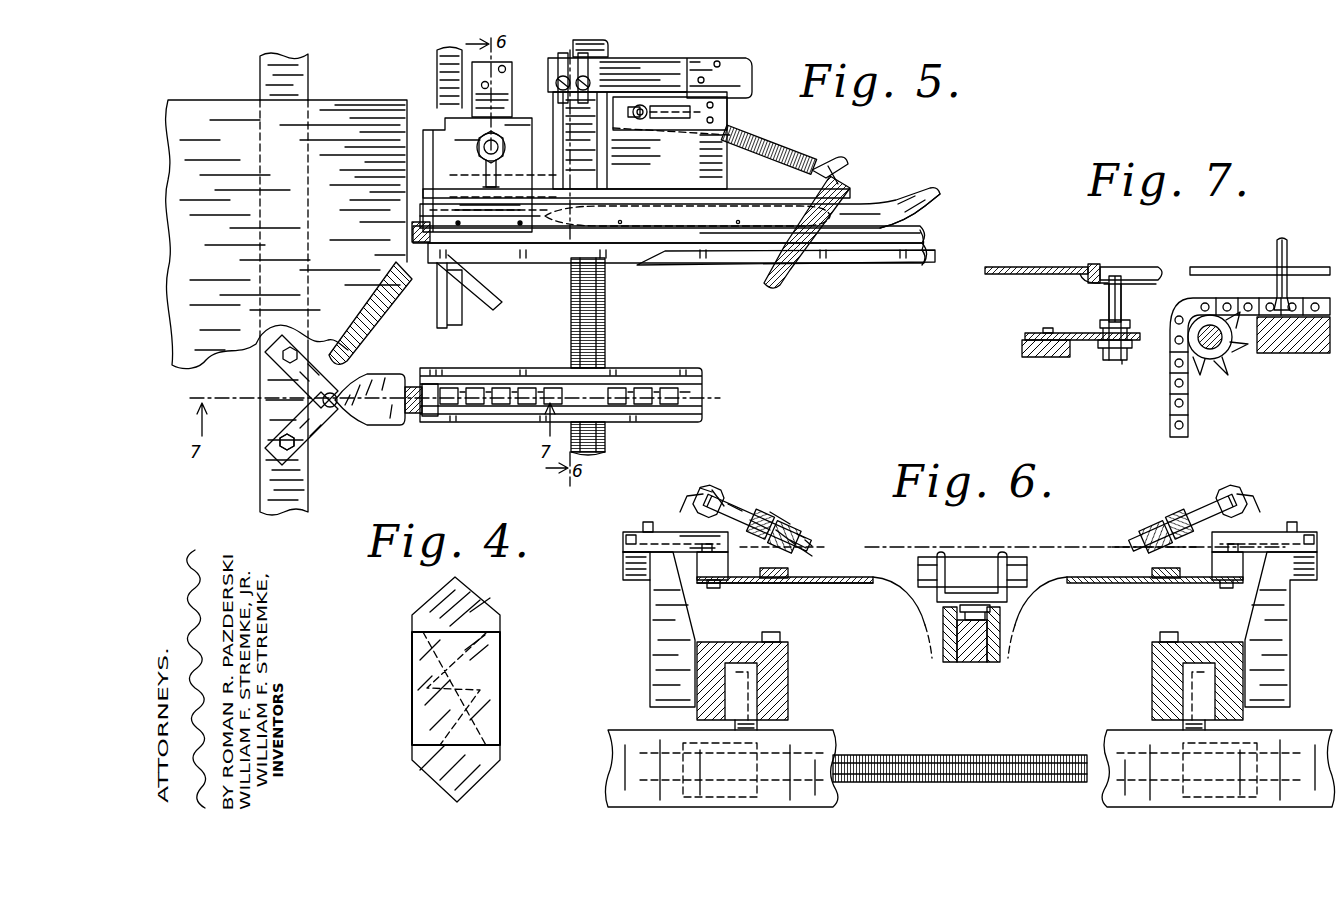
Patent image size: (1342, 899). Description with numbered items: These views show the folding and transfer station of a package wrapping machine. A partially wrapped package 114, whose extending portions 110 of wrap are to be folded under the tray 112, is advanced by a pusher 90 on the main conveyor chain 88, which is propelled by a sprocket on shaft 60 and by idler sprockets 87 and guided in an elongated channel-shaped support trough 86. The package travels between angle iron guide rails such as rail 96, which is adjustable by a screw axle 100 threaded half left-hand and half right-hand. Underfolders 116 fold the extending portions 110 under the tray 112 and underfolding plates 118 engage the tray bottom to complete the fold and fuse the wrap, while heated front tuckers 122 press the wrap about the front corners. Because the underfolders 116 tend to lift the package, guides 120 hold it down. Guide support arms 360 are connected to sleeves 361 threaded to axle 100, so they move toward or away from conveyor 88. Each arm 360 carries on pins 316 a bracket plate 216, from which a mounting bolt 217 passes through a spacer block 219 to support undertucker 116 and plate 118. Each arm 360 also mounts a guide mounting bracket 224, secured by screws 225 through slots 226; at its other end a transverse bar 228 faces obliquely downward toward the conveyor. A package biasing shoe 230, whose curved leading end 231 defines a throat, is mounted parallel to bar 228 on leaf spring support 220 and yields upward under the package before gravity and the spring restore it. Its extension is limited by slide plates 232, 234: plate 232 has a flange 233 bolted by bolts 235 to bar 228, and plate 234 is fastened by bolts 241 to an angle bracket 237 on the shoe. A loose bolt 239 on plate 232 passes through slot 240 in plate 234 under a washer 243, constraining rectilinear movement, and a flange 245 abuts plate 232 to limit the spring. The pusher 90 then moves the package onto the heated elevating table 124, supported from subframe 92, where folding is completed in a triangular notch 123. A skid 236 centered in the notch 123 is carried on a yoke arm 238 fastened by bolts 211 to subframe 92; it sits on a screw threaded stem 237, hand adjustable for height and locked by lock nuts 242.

In FIG. 5, the shaft 60 is at (463, 317).
In FIG. 5, the support trough 86 is at (520, 382).
In FIG. 7, the support trough 86 is at (1298, 354).
In FIG. 6, the support trough 86 is at (970, 665).
In FIG. 5, the idler sprockets 87 is at (424, 414).
In FIG. 7, the idler sprockets 87 is at (1228, 372).
In FIG. 5, the main conveyor chain 88 is at (481, 388).
In FIG. 7, the main conveyor chain 88 is at (1170, 401).
In FIG. 6, the main conveyor chain 88 is at (943, 660).
In FIG. 7, the pusher 90 is at (1281, 240).
In FIG. 6, the pusher 90 is at (1003, 560).
In FIG. 5, the subframe 92 is at (300, 499).
In FIG. 7, the subframe 92 is at (1047, 358).
In FIG. 5, the guide rail 96 is at (905, 266).
In FIG. 5, the screw axle 100 is at (606, 328).
In FIG. 6, the screw axle 100 is at (958, 749).
In FIG. 6, the extending portions 110 is at (925, 631).
In FIG. 4, the extending portions 110 is at (465, 592).
In FIG. 6, the tray 112 is at (880, 554).
In FIG. 4, the tray 112 is at (495, 744).
In FIG. 6, the package 114 is at (958, 554).
In FIG. 5, the underfolders 116 is at (557, 246).
In FIG. 7, the underfolders 116 is at (1308, 275).
In FIG. 6, the underfolders 116 is at (776, 585).
In FIG. 5, the underfolding plates 118 is at (463, 283).
In FIG. 6, the underfolding plates 118 is at (812, 585).
In FIG. 5, the guides 120 is at (713, 263).
In FIG. 6, the guides 120 is at (786, 512).
In FIG. 5, the front tuckers 122 is at (790, 272).
In FIG. 5, the notch 123 is at (372, 332).
In FIG. 7, the notch 123 is at (1098, 264).
In FIG. 5, the heated elevating table 124 is at (211, 128).
In FIG. 7, the heated elevating table 124 is at (1036, 266).
In FIG. 5, the bolts 211 is at (280, 446).
In FIG. 7, the bolts 211 is at (1050, 333).
In FIG. 5, the bracket plate 216 is at (506, 72).
In FIG. 6, the bracket plate 216 is at (650, 581).
In FIG. 6, the mounting bolt 217 is at (714, 589).
In FIG. 6, the spacer block 219 is at (700, 581).
In FIG. 5, the leaf spring support 220 is at (762, 209).
In FIG. 6, the leaf spring support 220 is at (795, 530).
In FIG. 5, the guide mounting bracket 224 is at (588, 167).
In FIG. 6, the guide mounting bracket 224 is at (966, 531).
In FIG. 5, the screws 225 is at (592, 83).
In FIG. 6, the screws 225 is at (646, 523).
In FIG. 5, the slots 226 is at (590, 66).
In FIG. 5, the transverse bar 228 is at (722, 194).
In FIG. 6, the transverse bar 228 is at (768, 580).
In FIG. 5, the package biasing shoe 230 is at (680, 232).
In FIG. 6, the package biasing shoe 230 is at (812, 550).
In FIG. 5, the leading end 231 is at (938, 208).
In FIG. 6, the slide plate 232 is at (735, 500).
In FIG. 6, the flange 233 is at (1128, 552).
In FIG. 5, the slide plate 234 is at (453, 210).
In FIG. 6, the slide plate 234 is at (763, 522).
In FIG. 6, the bolts 235 is at (765, 568).
In FIG. 5, the skid 236 is at (374, 378).
In FIG. 7, the skid 236 is at (1156, 266).
In FIG. 7, the screw threaded stem 237 is at (1108, 294).
In FIG. 6, the screw threaded stem 237 is at (812, 541).
In FIG. 5, the yoke arm 238 is at (316, 418).
In FIG. 7, the yoke arm 238 is at (1121, 306).
In FIG. 5, the bolt 239 is at (486, 168).
In FIG. 6, the bolt 239 is at (720, 487).
In FIG. 5, the slot 240 is at (480, 178).
In FIG. 6, the slot 240 is at (726, 492).
In FIG. 5, the bolts 241 is at (520, 222).
In FIG. 6, the bolts 241 is at (800, 533).
In FIG. 7, the lock nuts 242 is at (1138, 322).
In FIG. 5, the washer 243 is at (477, 146).
In FIG. 6, the washer 243 is at (710, 488).
In FIG. 5, the flange 245 is at (458, 118).
In FIG. 6, the flange 245 is at (690, 500).
In FIG. 5, the pins 316 is at (510, 76).
In FIG. 6, the pins 316 is at (624, 538).
In FIG. 5, the guide support arm 360 is at (666, 70).
In FIG. 6, the guide support arm 360 is at (650, 616).
In FIG. 6, the sleeves 361 is at (698, 742).